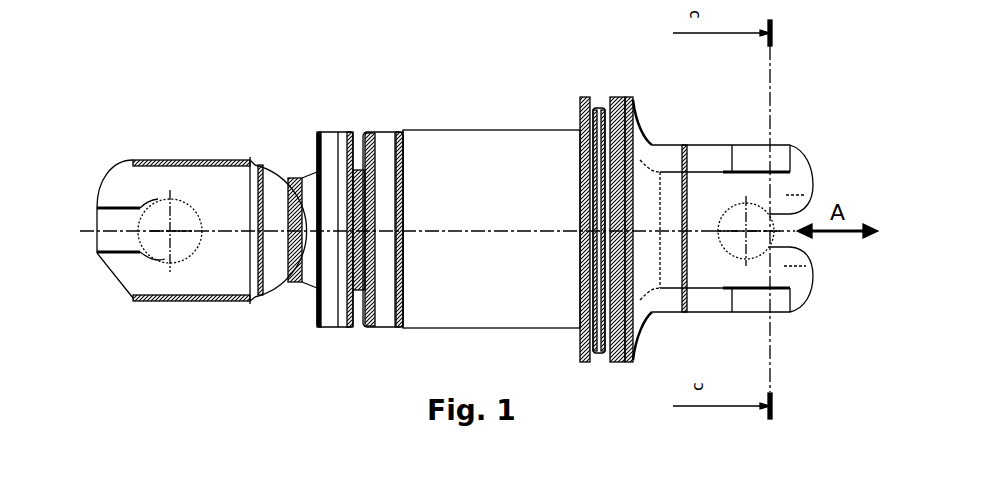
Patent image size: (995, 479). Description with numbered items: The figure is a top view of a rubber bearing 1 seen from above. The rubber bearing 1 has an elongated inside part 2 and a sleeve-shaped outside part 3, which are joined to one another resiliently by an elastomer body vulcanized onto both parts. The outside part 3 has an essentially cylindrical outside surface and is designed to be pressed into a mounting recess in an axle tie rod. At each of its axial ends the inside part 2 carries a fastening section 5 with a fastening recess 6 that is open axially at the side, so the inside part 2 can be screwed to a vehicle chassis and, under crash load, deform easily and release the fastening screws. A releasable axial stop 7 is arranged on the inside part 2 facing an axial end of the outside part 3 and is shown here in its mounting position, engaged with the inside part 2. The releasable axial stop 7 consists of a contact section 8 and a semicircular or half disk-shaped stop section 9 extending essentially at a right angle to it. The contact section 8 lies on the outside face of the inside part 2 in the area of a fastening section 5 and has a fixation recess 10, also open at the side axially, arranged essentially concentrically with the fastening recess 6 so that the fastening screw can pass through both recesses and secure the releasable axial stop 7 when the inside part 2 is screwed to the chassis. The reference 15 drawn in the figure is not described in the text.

The rubber bearing 1 is at (142, 39).
The inside part 2 is at (290, 144).
The outside part 3 is at (440, 128).
The fastening section 5 is at (183, 178).
The fastening recess 6 is at (160, 262).
The releasable axial stop 7 is at (660, 325).
The contact section 8 is at (710, 185).
The stop section 9 is at (620, 98).
The fixation recess 10 is at (795, 182).
The flange 15 is at (325, 132).